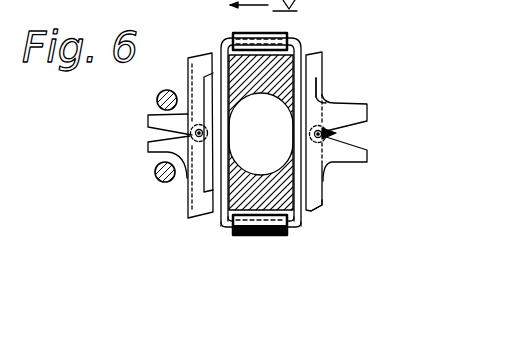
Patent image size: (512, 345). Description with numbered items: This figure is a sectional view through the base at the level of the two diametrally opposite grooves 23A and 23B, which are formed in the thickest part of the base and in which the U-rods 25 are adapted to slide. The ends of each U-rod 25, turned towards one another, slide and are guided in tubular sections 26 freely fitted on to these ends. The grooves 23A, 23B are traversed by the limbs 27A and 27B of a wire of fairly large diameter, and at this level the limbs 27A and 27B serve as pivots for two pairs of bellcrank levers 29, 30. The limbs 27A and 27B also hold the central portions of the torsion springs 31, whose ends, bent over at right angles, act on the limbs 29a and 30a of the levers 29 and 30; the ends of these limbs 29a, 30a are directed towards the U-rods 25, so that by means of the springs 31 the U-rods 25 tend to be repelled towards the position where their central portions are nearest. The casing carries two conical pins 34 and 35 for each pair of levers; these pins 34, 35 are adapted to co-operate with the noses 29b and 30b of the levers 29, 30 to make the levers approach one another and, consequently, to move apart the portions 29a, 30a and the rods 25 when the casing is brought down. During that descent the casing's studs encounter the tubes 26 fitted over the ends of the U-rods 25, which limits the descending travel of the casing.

The groove 23A is at (336, 133).
The groove 23B is at (218, 219).
The U-rod 25 is at (220, 55).
The tubular section 26 is at (271, 33).
The limb of wire 27A is at (323, 135).
The limb of wire 27B is at (196, 130).
The bellcrank lever 29 is at (368, 112).
The limb of lever 29a is at (313, 70).
The nose of lever 29b is at (160, 120).
The bellcrank lever 30 is at (368, 149).
The limb of lever 30a is at (323, 207).
The nose of lever 30b is at (158, 147).
The torsion spring 31 is at (187, 74).
The conical pin 34 is at (157, 99).
The conical pin 35 is at (155, 171).